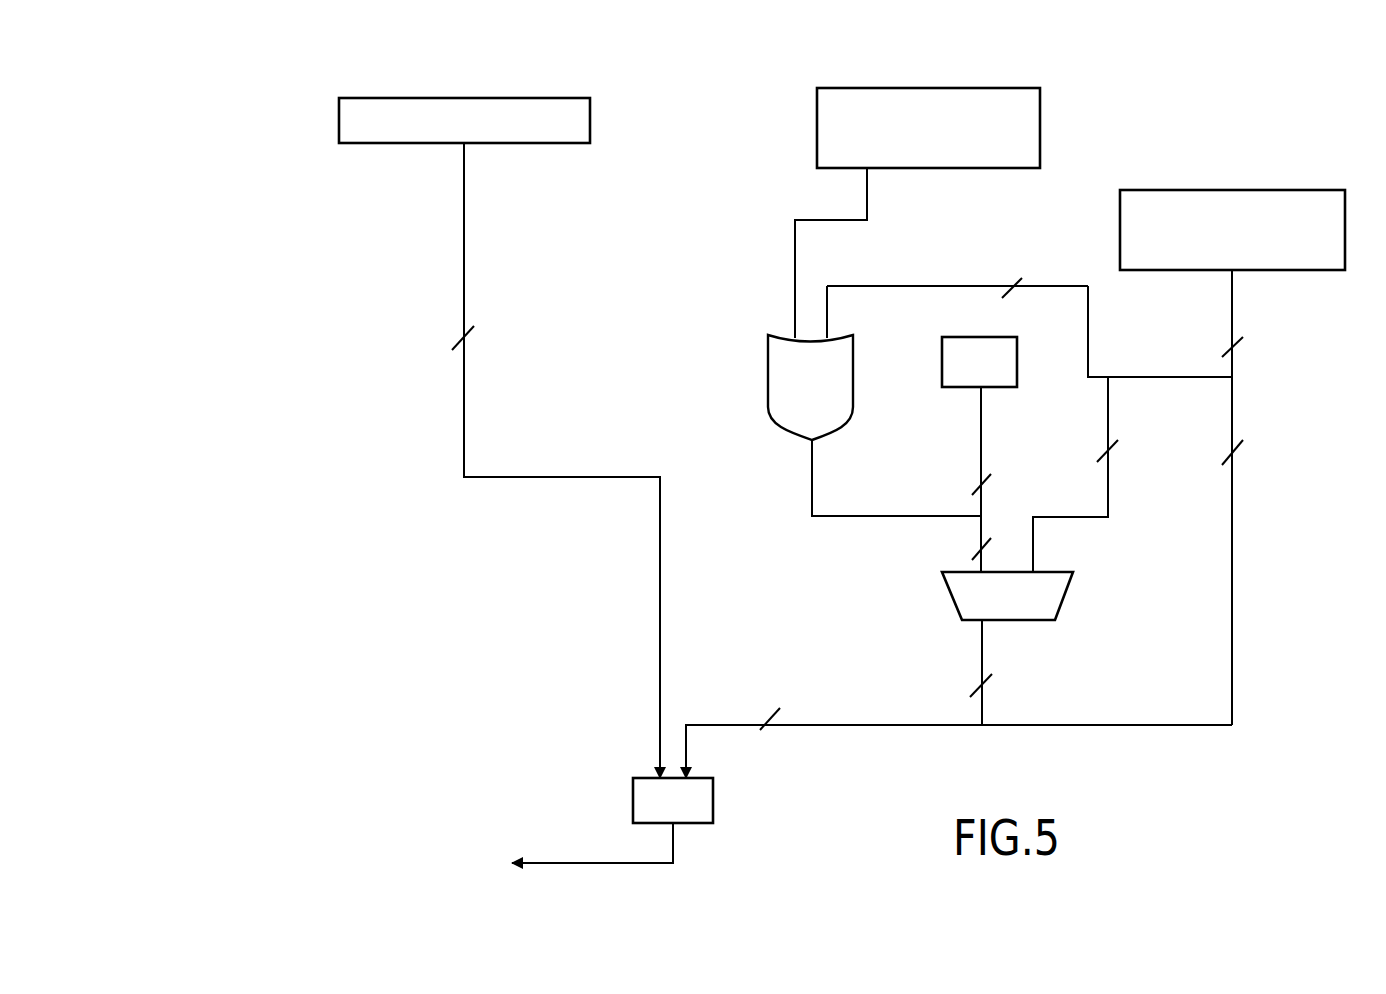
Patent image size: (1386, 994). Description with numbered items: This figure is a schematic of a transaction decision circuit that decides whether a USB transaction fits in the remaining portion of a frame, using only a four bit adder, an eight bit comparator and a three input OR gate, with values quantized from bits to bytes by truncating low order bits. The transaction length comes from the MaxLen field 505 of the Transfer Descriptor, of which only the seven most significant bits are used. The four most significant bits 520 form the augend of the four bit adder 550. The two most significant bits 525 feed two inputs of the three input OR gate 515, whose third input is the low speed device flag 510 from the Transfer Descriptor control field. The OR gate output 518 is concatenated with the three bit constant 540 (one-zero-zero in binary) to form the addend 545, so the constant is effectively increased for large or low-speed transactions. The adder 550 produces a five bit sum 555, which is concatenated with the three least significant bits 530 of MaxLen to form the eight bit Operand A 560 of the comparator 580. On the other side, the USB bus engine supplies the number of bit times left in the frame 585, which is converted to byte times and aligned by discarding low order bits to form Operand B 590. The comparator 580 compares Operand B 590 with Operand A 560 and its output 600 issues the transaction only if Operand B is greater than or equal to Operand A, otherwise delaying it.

The maximum length field 505 is at (1233, 190).
The low speed device flag 510 is at (945, 88).
The three input OR gate 515 is at (840, 336).
The output of OR gate 518 is at (812, 472).
The four most significant bits of MaxLen 520 is at (1108, 402).
The two most significant bits of MaxLen 525 is at (990, 286).
The three least significant bits of MaxLen 530 is at (1165, 728).
The three bit constant 540 is at (1000, 337).
The addend 545 is at (981, 540).
The four bit adder 550 is at (1050, 574).
The five bit output sum 555 is at (985, 640).
The operand A 560 is at (820, 728).
The comparator 580 is at (715, 797).
The bit times left in frame 585 is at (502, 98).
The operand B 590 is at (597, 478).
The comparator output 600 is at (582, 863).